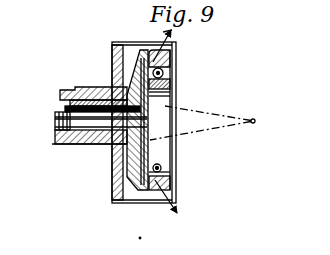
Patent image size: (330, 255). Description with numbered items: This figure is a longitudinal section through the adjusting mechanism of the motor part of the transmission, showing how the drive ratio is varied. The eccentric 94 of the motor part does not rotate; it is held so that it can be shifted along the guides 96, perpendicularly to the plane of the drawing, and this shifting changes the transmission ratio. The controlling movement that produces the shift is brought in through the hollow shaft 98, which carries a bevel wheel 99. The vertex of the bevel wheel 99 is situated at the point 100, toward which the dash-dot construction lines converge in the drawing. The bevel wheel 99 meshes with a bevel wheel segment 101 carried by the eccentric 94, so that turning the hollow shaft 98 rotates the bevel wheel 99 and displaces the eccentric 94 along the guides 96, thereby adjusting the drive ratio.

The eccentric 94 is at (147, 55).
The guides 96 is at (0, 55).
The hollow shaft 98 is at (75, 126).
The bevel wheel 99 is at (125, 140).
The vertex of the bevel wheel 100 is at (255, 121).
The bevel wheel segment 101 is at (140, 67).